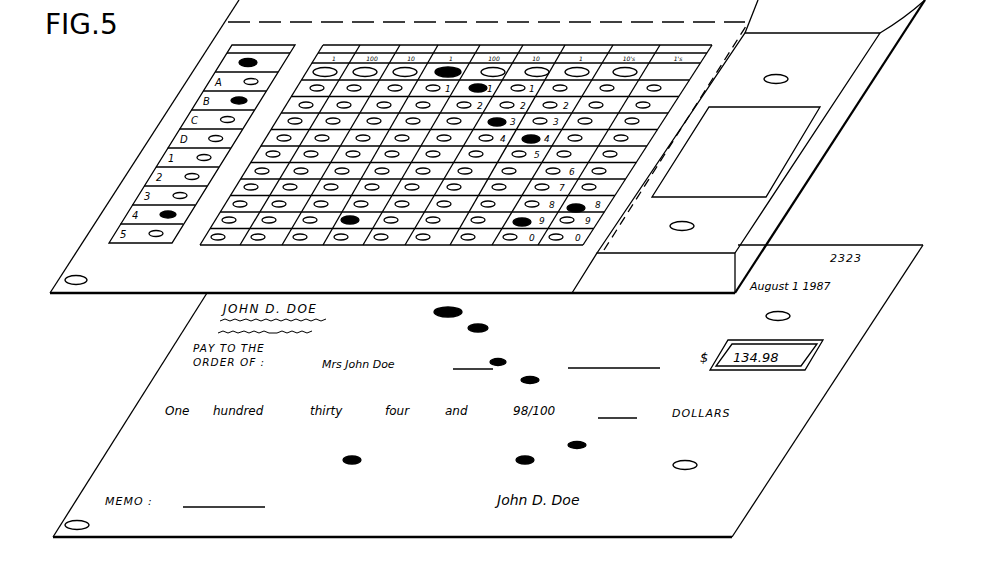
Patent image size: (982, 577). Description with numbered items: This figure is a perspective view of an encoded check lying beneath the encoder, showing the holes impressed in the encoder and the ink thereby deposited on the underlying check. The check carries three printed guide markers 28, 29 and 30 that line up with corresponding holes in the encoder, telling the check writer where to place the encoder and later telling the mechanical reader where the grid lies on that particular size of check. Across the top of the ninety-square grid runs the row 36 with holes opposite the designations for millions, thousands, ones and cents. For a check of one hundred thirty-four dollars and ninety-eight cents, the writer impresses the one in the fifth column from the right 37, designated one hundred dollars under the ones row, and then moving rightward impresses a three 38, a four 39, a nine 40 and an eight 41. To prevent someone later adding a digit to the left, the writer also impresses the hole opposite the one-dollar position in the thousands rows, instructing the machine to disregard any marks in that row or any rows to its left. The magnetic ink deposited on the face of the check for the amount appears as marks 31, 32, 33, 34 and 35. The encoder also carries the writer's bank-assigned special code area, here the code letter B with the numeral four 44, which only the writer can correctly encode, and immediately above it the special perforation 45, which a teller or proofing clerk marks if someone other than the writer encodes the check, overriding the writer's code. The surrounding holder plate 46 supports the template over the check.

The guide marker 28 is at (88, 521).
The guide marker 29 is at (697, 469).
The guide marker 30 is at (790, 313).
The magnetic ink mark 31 is at (488, 327).
The magnetic ink mark 32 is at (505, 360).
The magnetic ink mark 33 is at (540, 382).
The magnetic ink mark 34 is at (517, 462).
The magnetic ink mark 35 is at (586, 443).
The top row 36 is at (680, 73).
The impressed hole for numeral one 37 is at (478, 84).
The impressed hole for numeral three 38 is at (497, 118).
The impressed hole for numeral four 39 is at (531, 135).
The impressed hole for numeral nine 40 is at (523, 227).
The impressed hole for numeral eight 41 is at (576, 213).
The special code 44 is at (231, 101).
The special perforation 45 is at (240, 62).
The template holder 46 is at (100, 262).